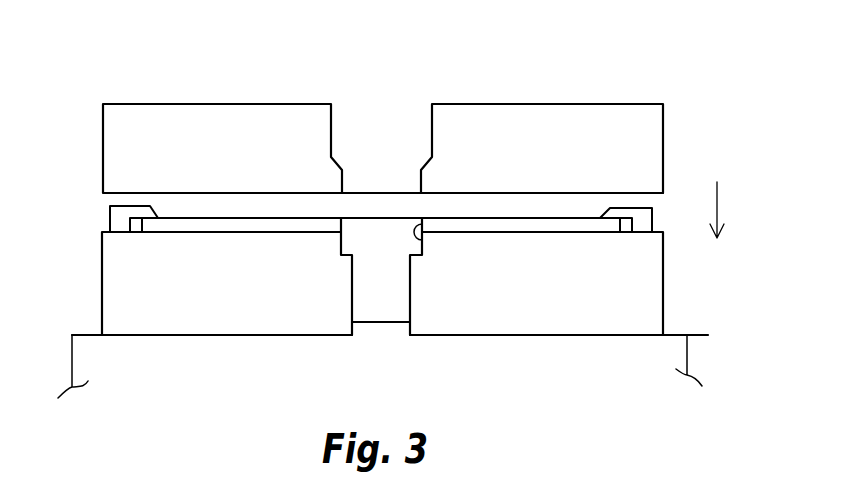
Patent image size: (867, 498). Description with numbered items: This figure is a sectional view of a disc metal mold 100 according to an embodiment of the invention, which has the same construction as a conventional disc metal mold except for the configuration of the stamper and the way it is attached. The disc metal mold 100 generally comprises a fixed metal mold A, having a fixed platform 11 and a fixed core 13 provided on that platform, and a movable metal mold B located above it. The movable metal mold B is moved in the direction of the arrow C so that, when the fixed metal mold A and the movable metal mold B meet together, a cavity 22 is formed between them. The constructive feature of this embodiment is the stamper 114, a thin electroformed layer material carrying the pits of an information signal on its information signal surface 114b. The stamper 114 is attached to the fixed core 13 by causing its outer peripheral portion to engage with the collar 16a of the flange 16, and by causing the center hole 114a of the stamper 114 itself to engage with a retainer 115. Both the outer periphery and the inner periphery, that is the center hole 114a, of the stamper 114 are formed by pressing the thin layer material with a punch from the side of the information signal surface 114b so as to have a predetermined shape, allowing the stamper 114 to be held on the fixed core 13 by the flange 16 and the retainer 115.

The disc metal mold 100 is at (88, 36).
The cavity 22 is at (465, 208).
The flange 16 is at (97, 218).
The collar 16a is at (135, 205).
The fixed core 13 is at (143, 268).
The stamper 114 is at (228, 240).
The center hole 114a is at (423, 246).
The information signal surface 114b is at (527, 218).
The retainer 115 is at (380, 297).
The fixed platform 11 is at (396, 357).
The fixed metal mold A is at (389, 300).
The movable metal mold B is at (676, 158).
The direction of movement C is at (730, 210).